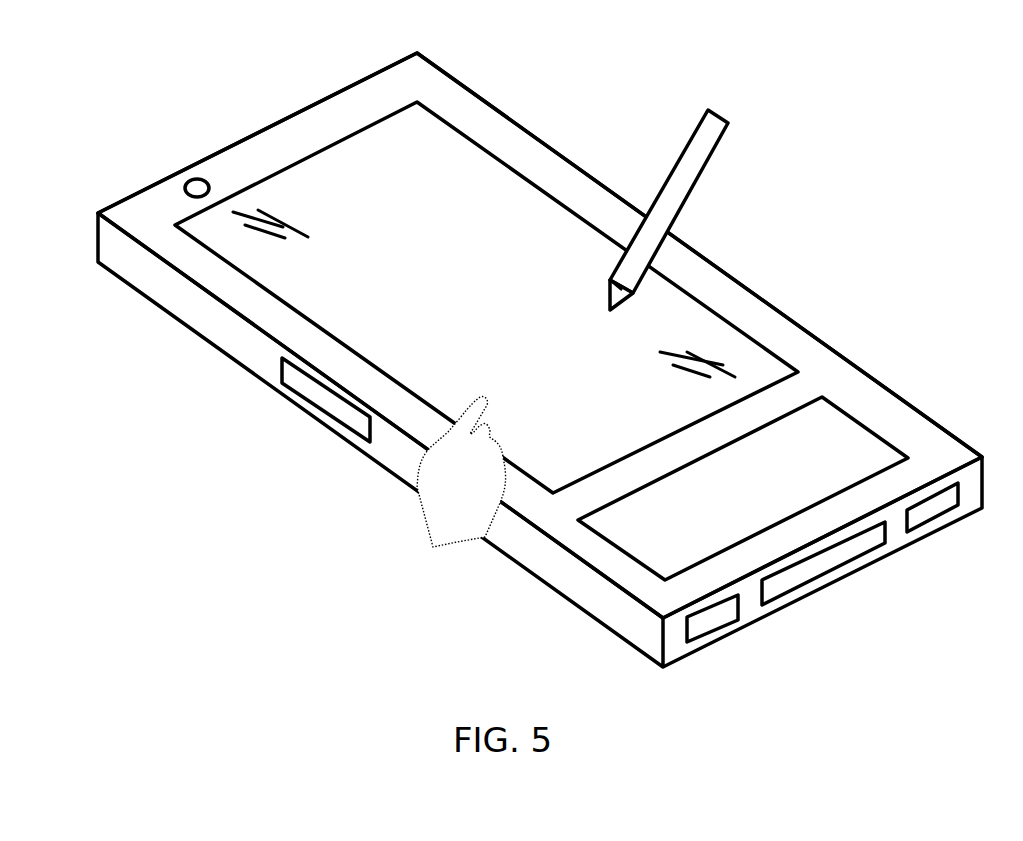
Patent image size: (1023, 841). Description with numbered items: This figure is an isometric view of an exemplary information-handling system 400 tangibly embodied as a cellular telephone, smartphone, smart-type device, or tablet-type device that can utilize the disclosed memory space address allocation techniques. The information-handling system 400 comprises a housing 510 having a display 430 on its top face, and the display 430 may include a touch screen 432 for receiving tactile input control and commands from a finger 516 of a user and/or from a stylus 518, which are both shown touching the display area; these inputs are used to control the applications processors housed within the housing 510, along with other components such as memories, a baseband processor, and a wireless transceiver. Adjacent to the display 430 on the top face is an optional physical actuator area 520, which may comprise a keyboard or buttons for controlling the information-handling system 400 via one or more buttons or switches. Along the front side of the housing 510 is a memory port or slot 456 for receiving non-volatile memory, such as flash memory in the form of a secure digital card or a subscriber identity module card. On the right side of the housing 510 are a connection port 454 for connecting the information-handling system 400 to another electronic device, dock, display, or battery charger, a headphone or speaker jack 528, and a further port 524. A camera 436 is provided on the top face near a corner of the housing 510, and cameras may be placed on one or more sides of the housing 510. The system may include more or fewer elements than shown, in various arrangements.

The information-handling system 400 is at (556, 84).
The housing 510 is at (357, 83).
The display 430 is at (392, 165).
The touch screen 432 is at (515, 300).
The camera 436 is at (192, 173).
The connection port 454 is at (840, 570).
The memory port or slot 456 is at (318, 395).
The finger 516 is at (476, 393).
The stylus 518 is at (690, 140).
The physical actuator area 520 is at (835, 445).
The port 524 is at (933, 518).
The headphone or speaker jack 528 is at (713, 628).